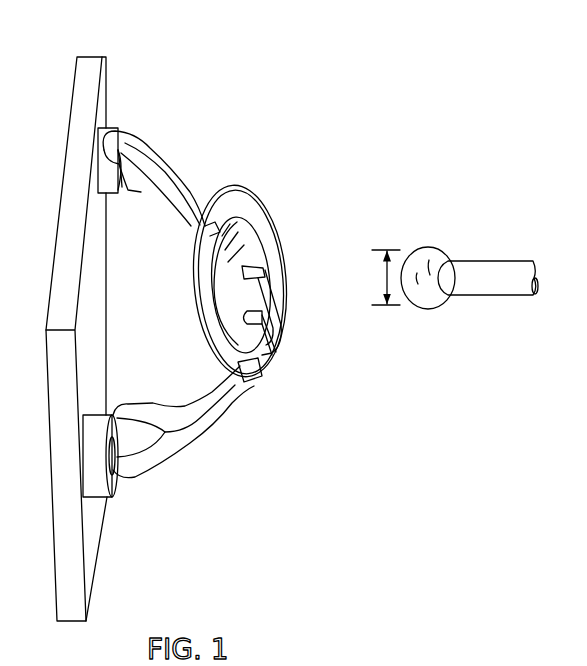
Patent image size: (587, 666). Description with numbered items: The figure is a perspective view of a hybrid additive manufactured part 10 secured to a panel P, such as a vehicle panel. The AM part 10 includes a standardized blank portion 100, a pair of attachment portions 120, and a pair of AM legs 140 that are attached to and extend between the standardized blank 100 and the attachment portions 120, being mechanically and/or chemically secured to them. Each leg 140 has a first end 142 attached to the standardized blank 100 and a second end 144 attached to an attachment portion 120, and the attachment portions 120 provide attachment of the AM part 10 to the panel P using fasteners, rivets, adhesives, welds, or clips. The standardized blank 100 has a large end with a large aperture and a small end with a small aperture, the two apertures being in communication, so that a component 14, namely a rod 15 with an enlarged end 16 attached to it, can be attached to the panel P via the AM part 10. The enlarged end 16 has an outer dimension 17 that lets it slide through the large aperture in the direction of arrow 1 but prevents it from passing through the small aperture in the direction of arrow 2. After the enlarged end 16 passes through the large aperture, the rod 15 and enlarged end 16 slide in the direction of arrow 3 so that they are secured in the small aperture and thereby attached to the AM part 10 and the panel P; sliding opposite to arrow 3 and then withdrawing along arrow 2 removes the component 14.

The panel P is at (82, 96).
The hybrid additive manufactured part 10 is at (284, 119).
The standardized blank portion 100 is at (248, 186).
The attachment portion 120 is at (112, 125).
The AM leg 140 is at (168, 156).
The first end 142 is at (266, 388).
The second end 144 is at (126, 126).
The component 14 is at (484, 224).
The rod 15 is at (486, 268).
The enlarged end 16 is at (429, 249).
The outer dimension 17 is at (386, 280).
The arrow 1 is at (266, 239).
The arrow 2 is at (272, 328).
The arrow 3 is at (163, 327).